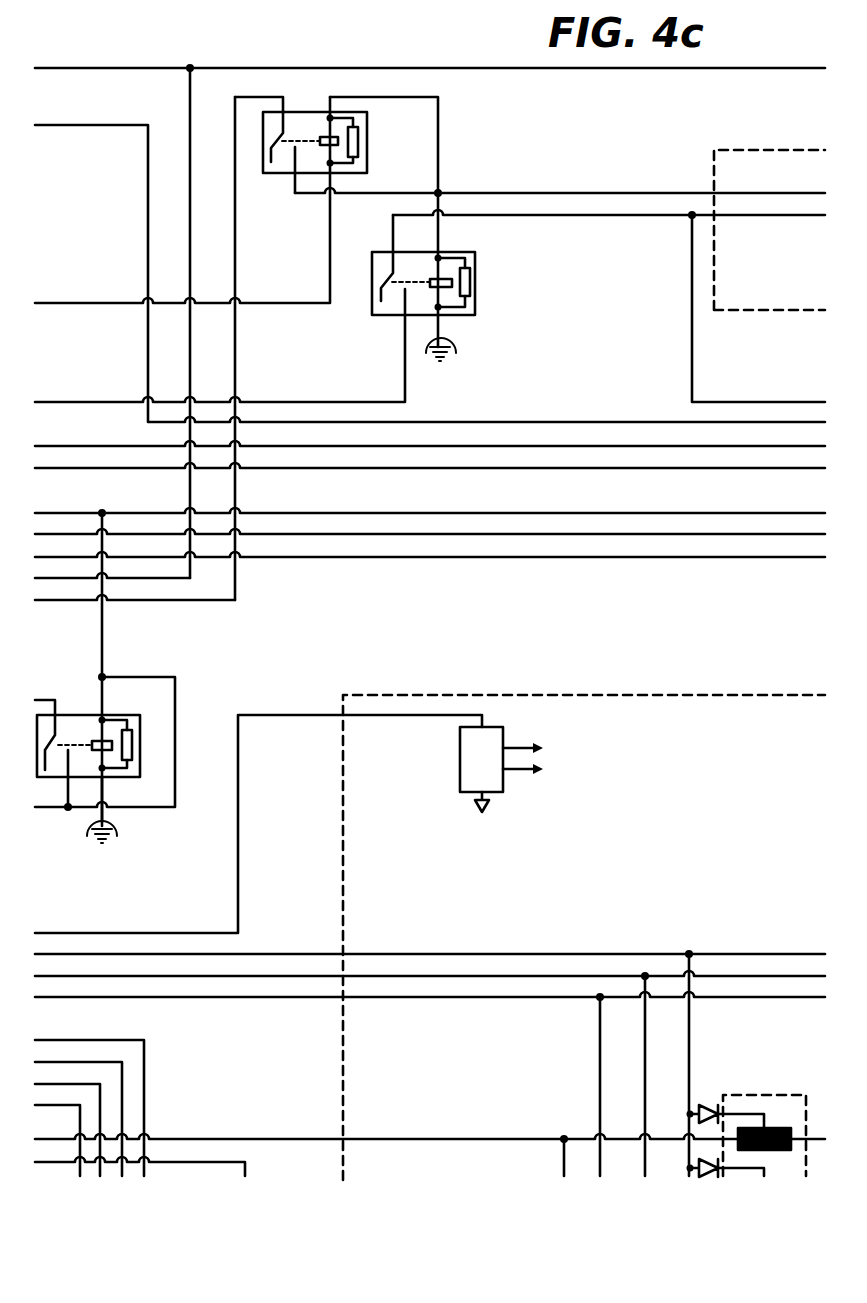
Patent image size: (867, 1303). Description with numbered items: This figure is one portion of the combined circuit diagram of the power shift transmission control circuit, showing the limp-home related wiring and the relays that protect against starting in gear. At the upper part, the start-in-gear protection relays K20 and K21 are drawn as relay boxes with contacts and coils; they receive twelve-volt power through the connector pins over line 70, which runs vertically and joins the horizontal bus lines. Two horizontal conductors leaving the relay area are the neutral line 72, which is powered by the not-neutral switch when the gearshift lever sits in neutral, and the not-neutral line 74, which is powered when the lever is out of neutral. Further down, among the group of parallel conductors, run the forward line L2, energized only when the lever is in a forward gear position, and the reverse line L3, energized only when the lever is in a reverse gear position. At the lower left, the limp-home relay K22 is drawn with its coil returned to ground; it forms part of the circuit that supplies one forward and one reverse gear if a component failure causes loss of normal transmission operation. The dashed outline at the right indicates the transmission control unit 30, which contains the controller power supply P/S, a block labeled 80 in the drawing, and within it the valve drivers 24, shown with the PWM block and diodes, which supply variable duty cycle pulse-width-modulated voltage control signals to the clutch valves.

The line 70 is at (236, 352).
The neutral line 72 is at (636, 193).
The not-neutral line 74 is at (632, 216).
The forward line L2 is at (523, 469).
The reverse line L3 is at (583, 536).
The start-in-gear protection relay K20 is at (368, 150).
The start-in-gear protection relay K21 is at (476, 296).
The limp-home relay K22 is at (155, 692).
The power supply 80 is at (460, 759).
The transmission control unit 30 is at (757, 798).
The valve drivers 24 is at (781, 1086).